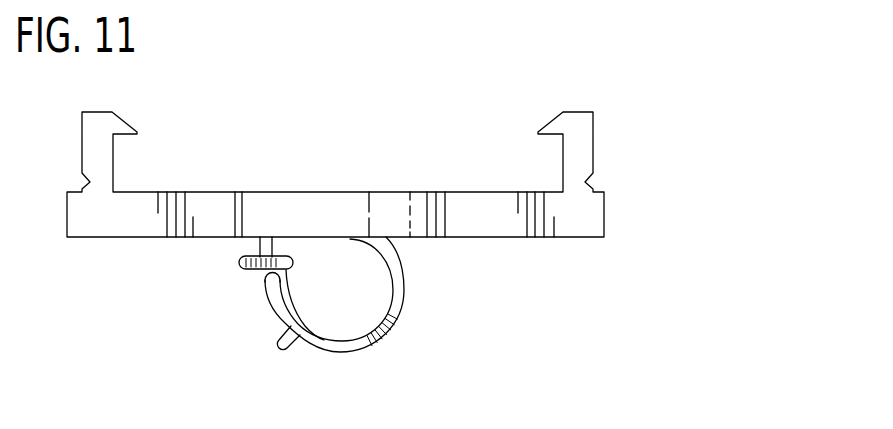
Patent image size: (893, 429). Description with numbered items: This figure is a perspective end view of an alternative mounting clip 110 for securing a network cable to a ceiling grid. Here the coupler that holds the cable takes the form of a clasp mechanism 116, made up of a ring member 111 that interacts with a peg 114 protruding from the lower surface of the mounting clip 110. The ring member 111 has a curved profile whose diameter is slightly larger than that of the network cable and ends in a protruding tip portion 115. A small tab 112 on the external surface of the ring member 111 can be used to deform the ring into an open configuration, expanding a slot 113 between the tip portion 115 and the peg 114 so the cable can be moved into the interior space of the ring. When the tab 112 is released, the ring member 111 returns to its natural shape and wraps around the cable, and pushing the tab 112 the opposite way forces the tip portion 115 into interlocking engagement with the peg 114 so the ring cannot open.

The mounting clip 110 is at (647, 205).
The ring member 111 is at (405, 292).
The tab 112 is at (291, 350).
The slot 113 is at (263, 275).
The peg 114 is at (240, 263).
The tip portion 115 is at (267, 283).
The clasp mechanism 116 is at (405, 350).